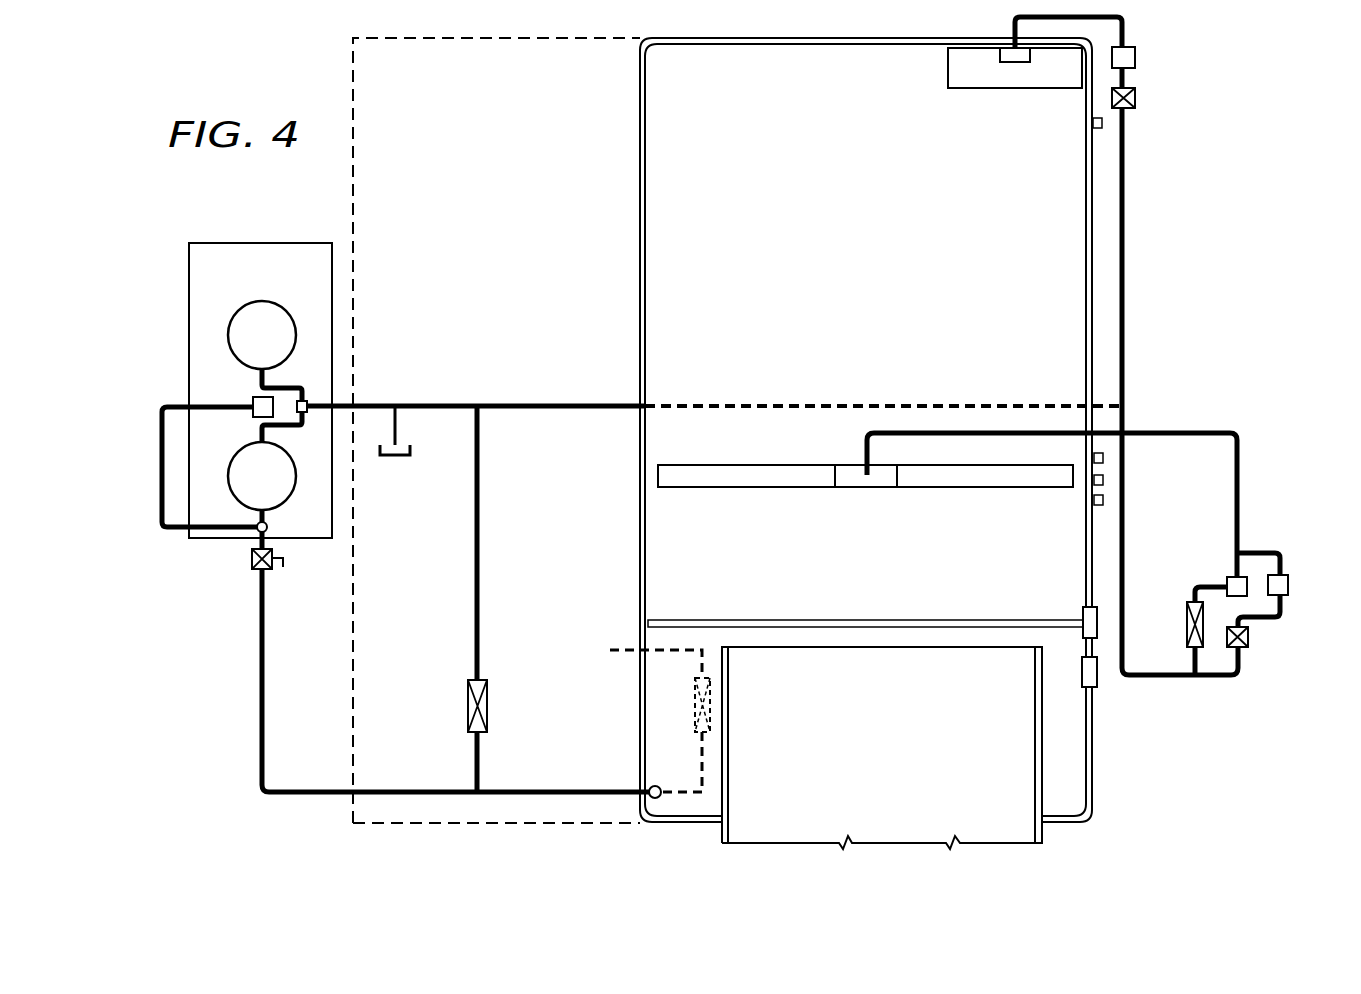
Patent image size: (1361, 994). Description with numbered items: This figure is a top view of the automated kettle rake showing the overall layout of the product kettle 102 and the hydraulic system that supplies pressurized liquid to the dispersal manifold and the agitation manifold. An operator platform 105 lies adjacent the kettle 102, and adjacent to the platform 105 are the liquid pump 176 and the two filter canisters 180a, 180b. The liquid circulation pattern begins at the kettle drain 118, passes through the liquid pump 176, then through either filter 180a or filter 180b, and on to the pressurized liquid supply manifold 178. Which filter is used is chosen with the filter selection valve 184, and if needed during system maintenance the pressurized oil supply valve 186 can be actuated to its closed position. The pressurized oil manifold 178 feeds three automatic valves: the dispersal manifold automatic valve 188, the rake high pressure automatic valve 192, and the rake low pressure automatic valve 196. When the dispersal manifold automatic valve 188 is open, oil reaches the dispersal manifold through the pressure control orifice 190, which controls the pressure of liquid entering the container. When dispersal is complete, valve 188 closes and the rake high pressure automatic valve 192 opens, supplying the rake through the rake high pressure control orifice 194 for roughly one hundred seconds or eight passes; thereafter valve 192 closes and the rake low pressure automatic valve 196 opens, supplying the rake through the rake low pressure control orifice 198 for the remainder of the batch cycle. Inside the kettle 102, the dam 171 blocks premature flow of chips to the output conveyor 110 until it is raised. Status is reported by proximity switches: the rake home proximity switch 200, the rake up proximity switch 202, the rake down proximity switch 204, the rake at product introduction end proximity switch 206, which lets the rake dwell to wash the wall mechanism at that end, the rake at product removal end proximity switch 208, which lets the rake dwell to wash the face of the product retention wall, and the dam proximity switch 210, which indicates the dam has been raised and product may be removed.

The product kettle 102 is at (759, 134).
The operator platform 105 is at (353, 97).
The output conveyor 110 is at (900, 709).
The kettle drain 118 is at (672, 770).
The dam 171 is at (790, 620).
The liquid pump 176 is at (190, 262).
The pressurized liquid supply manifold 178 is at (1130, 405).
The filter canister 180a is at (228, 330).
The filter canister 180b is at (283, 501).
The filter selection valve 184 is at (254, 396).
The pressurized oil supply valve 186 is at (252, 562).
The dispersal manifold automatic valve 188 is at (1135, 100).
The pressure control orifice 190 is at (1135, 60).
The rake high pressure automatic valve 192 is at (1248, 638).
The rake high pressure control orifice 194 is at (1288, 586).
The rake low pressure automatic valve 196 is at (1190, 605).
The rake low pressure control orifice 198 is at (1228, 577).
The rake home proximity switch 200 is at (1103, 457).
The rake up proximity switch 202 is at (1103, 480).
The rake down proximity switch 204 is at (1103, 500).
The rake at product introduction end proximity switch 206 is at (1103, 123).
The rake at product removal end proximity switch 208 is at (1083, 615).
The dam proximity switch 210 is at (1097, 680).